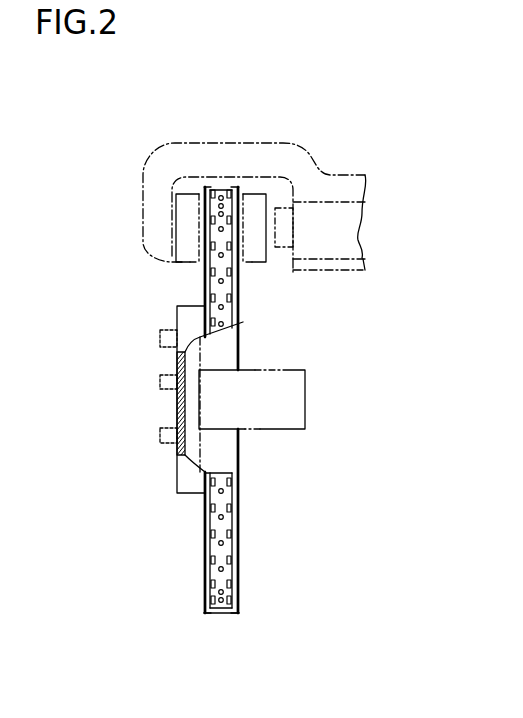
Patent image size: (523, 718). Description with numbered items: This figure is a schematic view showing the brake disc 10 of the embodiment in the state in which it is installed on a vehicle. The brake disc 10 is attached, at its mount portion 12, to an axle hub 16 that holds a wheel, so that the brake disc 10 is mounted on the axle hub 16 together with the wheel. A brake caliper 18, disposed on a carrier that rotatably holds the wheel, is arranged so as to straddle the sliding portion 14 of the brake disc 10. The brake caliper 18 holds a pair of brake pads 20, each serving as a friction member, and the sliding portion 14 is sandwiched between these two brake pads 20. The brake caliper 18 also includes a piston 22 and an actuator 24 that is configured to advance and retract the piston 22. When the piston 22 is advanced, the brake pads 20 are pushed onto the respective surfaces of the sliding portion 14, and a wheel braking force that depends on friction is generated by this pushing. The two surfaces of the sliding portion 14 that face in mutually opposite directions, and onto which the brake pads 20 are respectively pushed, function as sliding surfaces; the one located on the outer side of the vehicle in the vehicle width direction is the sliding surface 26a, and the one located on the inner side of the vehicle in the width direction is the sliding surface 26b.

The brake disc 10 is at (165, 578).
The mount portion 12 is at (165, 408).
The sliding portion 14 is at (250, 567).
The axle hub 16 is at (283, 367).
The brake caliper 18 is at (315, 137).
The brake pads 20 is at (184, 263).
The piston 22 is at (282, 243).
The actuator 24 is at (345, 208).
The sliding surface 26a is at (205, 553).
The sliding surface 26b is at (240, 543).